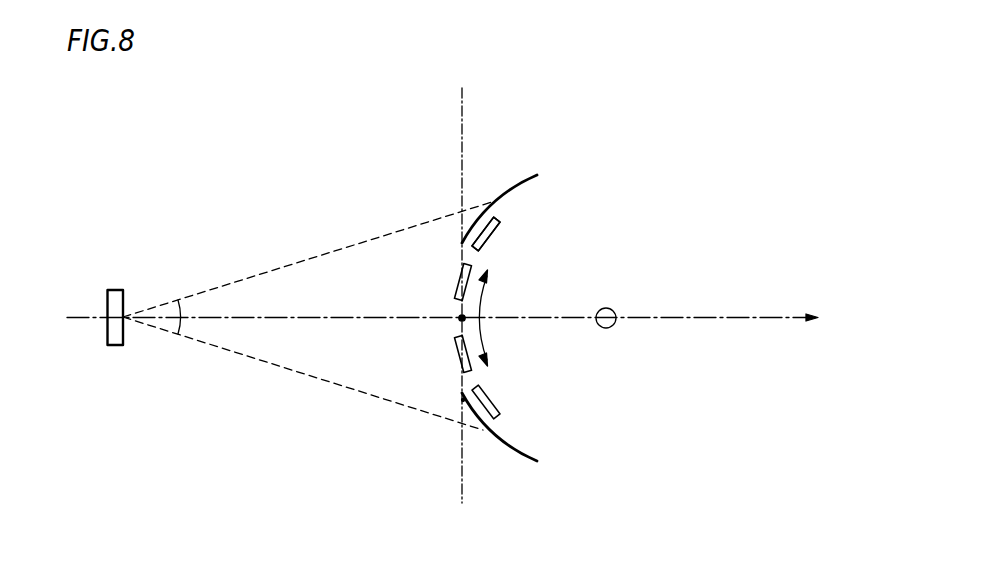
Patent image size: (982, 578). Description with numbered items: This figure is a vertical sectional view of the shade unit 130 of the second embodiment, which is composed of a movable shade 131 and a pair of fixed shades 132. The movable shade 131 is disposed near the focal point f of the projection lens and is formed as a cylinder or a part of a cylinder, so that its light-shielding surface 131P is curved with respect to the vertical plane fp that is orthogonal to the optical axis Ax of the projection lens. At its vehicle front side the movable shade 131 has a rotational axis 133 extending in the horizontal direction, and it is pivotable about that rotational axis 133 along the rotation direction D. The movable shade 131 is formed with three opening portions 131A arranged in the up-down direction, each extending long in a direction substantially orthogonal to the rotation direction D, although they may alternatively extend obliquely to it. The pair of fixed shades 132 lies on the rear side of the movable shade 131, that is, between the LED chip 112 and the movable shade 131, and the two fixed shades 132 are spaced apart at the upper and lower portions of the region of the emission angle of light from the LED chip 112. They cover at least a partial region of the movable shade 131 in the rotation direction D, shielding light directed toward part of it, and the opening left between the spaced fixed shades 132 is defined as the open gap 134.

The LED chip 112 is at (119, 290).
The shade unit 130 is at (400, 169).
The movable shade 131 is at (498, 402).
The opening portion 131A is at (475, 255).
The light-shielding surface 131P is at (463, 400).
The fixed shade 132 is at (513, 186).
The rotational axis 133 is at (608, 328).
The open gap 134 is at (450, 376).
The focal point f is at (458, 318).
The vertical plane fp is at (458, 148).
The rotation direction D is at (482, 303).
The optical axis Ax is at (458, 318).